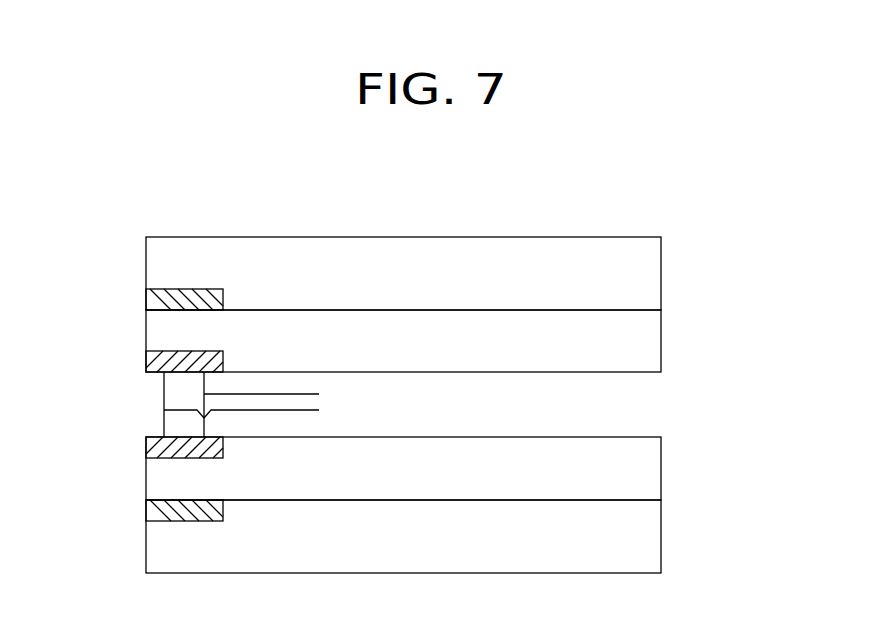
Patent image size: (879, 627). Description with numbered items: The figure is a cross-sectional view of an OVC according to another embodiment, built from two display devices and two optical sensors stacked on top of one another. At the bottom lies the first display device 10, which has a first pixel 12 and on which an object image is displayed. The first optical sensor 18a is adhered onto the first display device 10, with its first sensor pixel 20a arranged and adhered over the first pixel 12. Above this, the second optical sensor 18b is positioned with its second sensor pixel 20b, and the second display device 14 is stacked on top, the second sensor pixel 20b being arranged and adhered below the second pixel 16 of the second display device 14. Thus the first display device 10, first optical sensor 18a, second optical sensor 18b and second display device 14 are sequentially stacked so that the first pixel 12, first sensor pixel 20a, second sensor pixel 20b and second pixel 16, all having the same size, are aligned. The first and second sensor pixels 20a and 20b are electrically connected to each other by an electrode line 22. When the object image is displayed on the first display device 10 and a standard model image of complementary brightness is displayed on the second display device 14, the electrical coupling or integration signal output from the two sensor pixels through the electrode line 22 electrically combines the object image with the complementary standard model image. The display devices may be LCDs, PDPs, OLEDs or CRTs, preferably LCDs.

The first display device 10 is at (653, 537).
The first pixel 12 is at (145, 509).
The second display device 14 is at (653, 273).
The second pixel 16 is at (145, 297).
The first optical sensor 18a is at (653, 465).
The second optical sensor 18b is at (653, 341).
The first sensor pixel 20a is at (145, 449).
The second sensor pixel 20b is at (145, 359).
The electrode line 22 is at (310, 422).
The element OVC is at (564, 208).